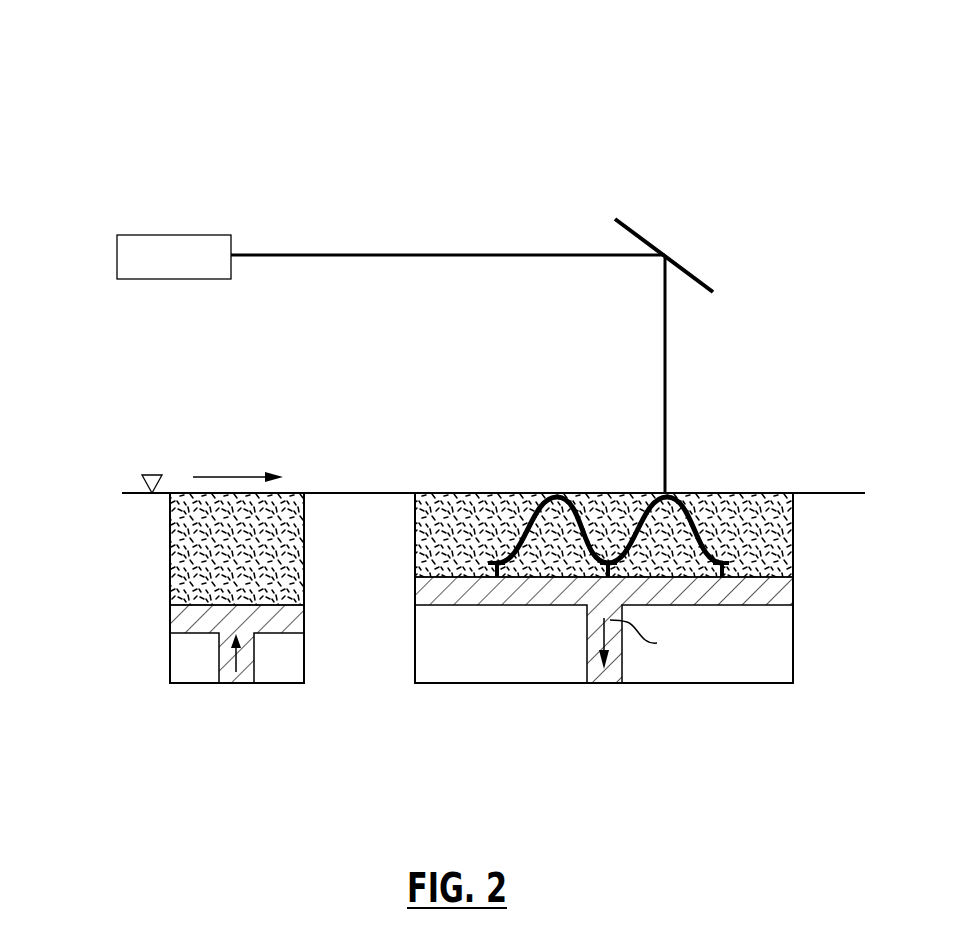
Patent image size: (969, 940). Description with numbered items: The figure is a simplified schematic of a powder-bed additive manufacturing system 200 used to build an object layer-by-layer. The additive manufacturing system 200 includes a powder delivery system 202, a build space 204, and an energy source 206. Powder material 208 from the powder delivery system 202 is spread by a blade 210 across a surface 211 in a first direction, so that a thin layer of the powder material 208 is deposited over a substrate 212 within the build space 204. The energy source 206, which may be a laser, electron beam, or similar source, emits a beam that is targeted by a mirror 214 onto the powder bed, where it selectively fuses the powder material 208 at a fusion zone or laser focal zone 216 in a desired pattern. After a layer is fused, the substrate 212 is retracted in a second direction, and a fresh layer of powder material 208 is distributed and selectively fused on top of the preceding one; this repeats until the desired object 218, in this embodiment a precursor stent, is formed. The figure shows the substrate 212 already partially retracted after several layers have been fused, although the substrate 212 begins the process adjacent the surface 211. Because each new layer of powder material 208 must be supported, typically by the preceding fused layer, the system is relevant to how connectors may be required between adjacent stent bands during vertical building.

The additive manufacturing system 200 is at (797, 134).
The powder delivery system 202 is at (172, 657).
The build space 204 is at (688, 683).
The energy source 206 is at (145, 235).
The powder material 208 is at (200, 563).
The blade 210 is at (122, 493).
The surface 211 is at (821, 490).
The substrate 212 is at (786, 593).
The mirror 214 is at (687, 269).
The laser focal zone 216 is at (657, 488).
The object 218 is at (733, 507).